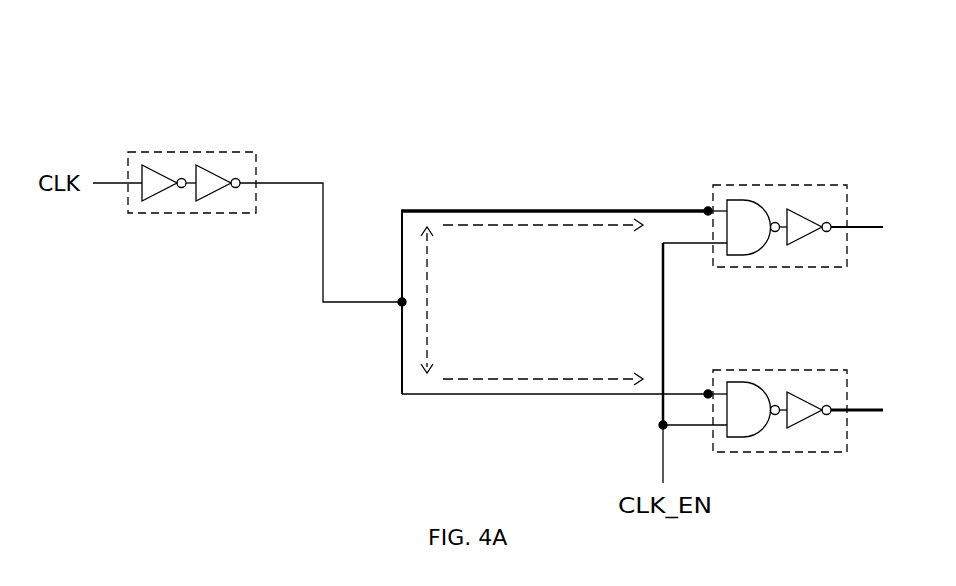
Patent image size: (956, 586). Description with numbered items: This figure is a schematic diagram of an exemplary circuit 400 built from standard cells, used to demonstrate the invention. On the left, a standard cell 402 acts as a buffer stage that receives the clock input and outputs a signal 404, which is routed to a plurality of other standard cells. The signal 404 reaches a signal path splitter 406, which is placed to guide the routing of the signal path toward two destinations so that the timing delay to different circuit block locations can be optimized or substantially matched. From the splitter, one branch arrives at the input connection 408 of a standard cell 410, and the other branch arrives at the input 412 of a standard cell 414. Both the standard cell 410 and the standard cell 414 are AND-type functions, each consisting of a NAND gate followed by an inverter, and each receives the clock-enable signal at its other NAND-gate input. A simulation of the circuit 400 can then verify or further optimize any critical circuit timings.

The circuit 400 is at (510, 87).
The standard cell 402 is at (190, 152).
The signal 404 is at (323, 265).
The signal path splitter 406 is at (402, 302).
The input connection 408 is at (708, 211).
The standard cell 410 is at (773, 185).
The input 412 is at (708, 394).
The standard cell 414 is at (773, 370).